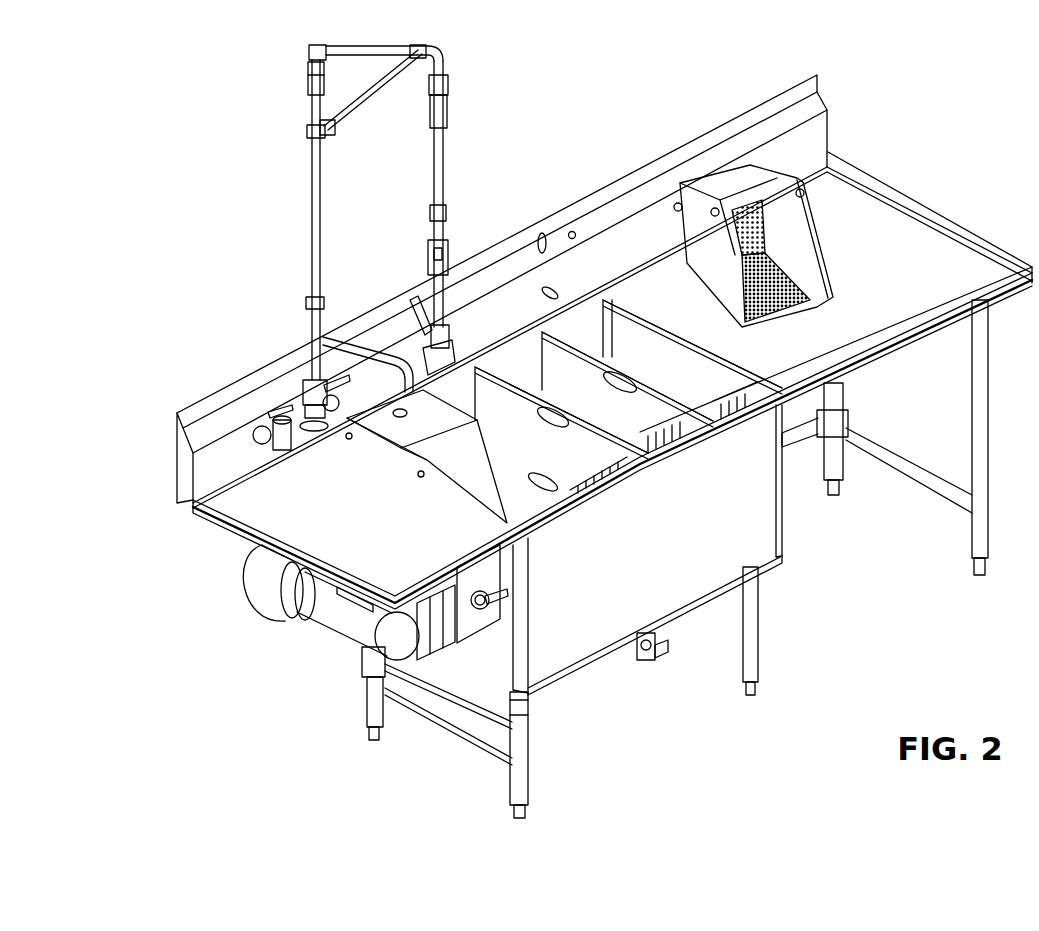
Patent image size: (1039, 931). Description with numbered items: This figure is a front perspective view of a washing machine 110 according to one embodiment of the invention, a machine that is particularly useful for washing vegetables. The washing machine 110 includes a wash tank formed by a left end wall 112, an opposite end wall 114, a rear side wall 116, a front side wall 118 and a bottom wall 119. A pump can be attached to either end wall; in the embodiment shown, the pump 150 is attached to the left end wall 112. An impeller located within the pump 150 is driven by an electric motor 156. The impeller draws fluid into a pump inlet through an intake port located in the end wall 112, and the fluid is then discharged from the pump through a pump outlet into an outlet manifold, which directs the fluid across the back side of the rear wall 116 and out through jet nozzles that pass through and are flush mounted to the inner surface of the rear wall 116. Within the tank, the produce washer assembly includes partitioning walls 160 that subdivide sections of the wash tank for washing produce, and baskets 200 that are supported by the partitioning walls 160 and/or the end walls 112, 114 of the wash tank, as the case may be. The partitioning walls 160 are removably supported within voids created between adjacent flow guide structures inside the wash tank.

The washing machine 110 is at (171, 213).
The left end wall 112 is at (483, 655).
The end wall 114 is at (642, 348).
The rear side wall 116 is at (518, 363).
The front side wall 118 is at (592, 595).
The bottom wall 119 is at (542, 688).
The pump 150 is at (258, 597).
The electric motor 156 is at (343, 621).
The partitioning walls 160 is at (630, 410).
The baskets 200 is at (700, 207).